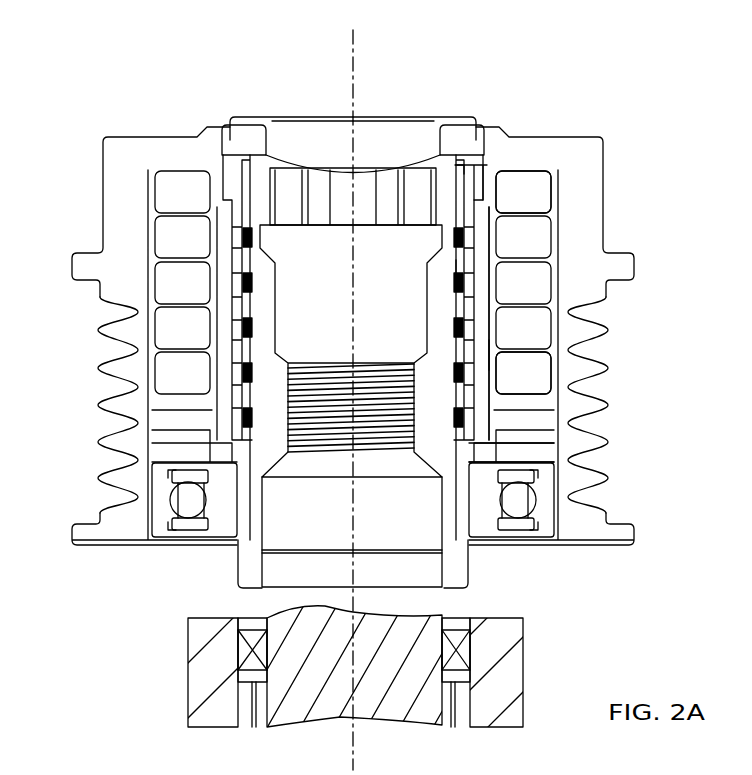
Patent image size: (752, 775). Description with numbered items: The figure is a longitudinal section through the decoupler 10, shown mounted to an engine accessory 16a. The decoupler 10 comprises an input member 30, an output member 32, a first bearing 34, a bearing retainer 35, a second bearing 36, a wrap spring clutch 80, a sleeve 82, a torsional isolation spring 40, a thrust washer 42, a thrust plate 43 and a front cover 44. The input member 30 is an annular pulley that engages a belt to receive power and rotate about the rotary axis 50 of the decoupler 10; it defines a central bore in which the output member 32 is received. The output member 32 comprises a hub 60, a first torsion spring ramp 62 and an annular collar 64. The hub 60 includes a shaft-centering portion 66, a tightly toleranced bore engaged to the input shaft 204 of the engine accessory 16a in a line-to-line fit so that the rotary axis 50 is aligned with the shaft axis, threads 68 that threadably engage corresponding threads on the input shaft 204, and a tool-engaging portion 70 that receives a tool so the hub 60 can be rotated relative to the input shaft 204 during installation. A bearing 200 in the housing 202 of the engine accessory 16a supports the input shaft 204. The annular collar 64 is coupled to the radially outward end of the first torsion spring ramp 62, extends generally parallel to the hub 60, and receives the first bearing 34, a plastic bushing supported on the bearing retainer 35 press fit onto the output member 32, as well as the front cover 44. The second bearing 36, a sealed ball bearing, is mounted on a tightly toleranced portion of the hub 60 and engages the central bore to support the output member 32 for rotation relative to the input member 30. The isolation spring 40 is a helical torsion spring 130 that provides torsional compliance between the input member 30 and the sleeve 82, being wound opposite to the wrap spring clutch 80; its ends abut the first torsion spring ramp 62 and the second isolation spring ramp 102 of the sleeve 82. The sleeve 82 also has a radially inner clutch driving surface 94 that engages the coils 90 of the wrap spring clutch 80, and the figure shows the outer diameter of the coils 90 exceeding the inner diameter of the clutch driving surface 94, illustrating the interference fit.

The decoupler 10 is at (176, 106).
The input member 30 is at (601, 227).
The output member 32 is at (253, 458).
The first bearing 34 is at (481, 182).
The bearing retainer 35 is at (462, 174).
The second bearing 36 is at (543, 507).
The torsional isolation spring 40 is at (528, 225).
The torsion spring 130 is at (523, 282).
The thrust washer 42 is at (523, 435).
The thrust plate 43 is at (523, 450).
The front cover 44 is at (443, 128).
The rotary axis 50 is at (355, 572).
The hub 60 is at (243, 567).
The first torsion spring ramp 62 is at (178, 170).
The annular collar 64 is at (487, 177).
The shaft-centering portion 66 is at (287, 588).
The threads 68 is at (288, 435).
The tool-engaging portion 70 is at (430, 205).
The wrap spring clutch 80 is at (467, 320).
The sleeve 82 is at (488, 352).
The coils 90 is at (235, 375).
The clutch driving surface 94 is at (453, 272).
The second isolation spring ramp 102 is at (522, 412).
The engine accessory 16a is at (537, 664).
The bearing 200 is at (247, 650).
The housing 202 is at (190, 648).
The input shaft 204 is at (282, 703).